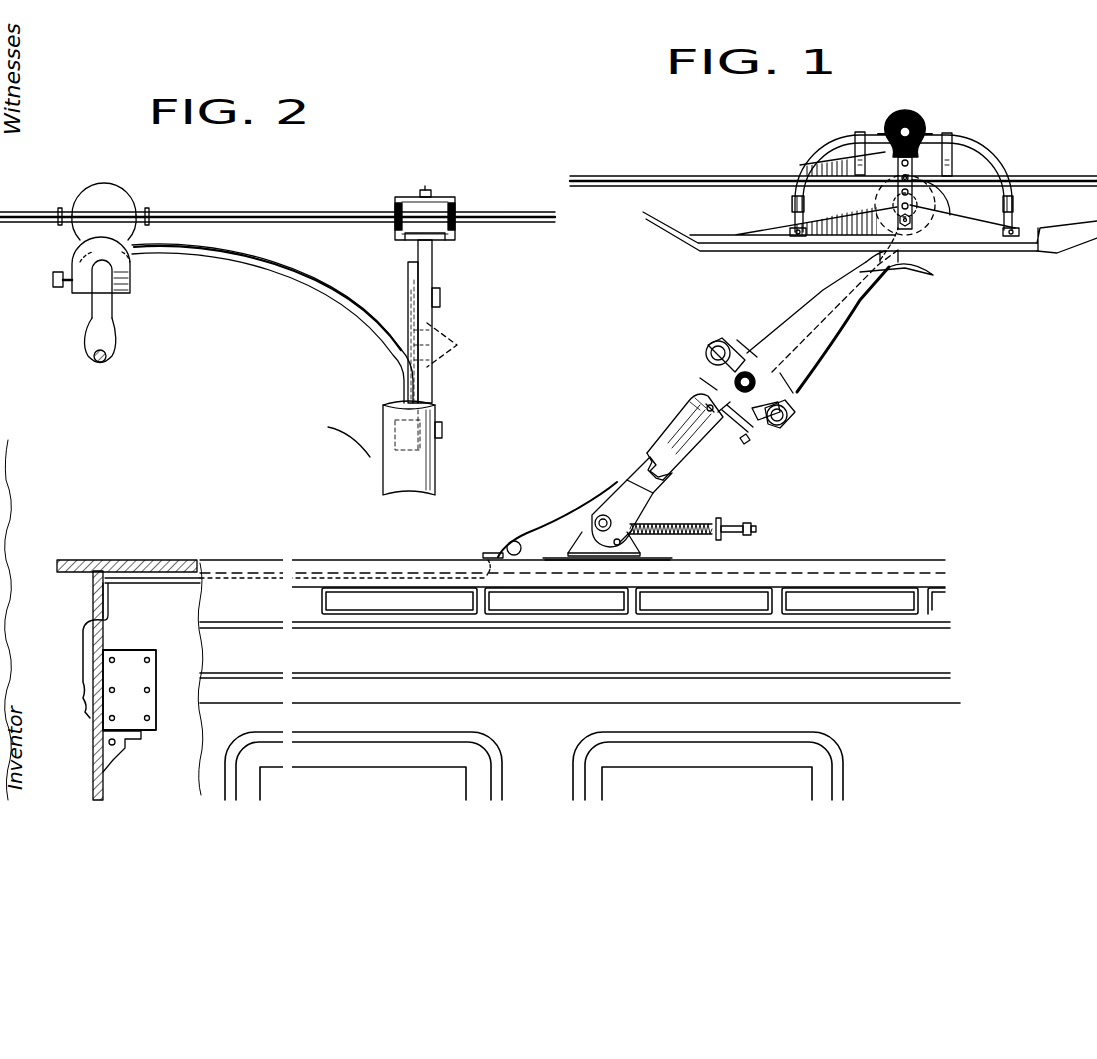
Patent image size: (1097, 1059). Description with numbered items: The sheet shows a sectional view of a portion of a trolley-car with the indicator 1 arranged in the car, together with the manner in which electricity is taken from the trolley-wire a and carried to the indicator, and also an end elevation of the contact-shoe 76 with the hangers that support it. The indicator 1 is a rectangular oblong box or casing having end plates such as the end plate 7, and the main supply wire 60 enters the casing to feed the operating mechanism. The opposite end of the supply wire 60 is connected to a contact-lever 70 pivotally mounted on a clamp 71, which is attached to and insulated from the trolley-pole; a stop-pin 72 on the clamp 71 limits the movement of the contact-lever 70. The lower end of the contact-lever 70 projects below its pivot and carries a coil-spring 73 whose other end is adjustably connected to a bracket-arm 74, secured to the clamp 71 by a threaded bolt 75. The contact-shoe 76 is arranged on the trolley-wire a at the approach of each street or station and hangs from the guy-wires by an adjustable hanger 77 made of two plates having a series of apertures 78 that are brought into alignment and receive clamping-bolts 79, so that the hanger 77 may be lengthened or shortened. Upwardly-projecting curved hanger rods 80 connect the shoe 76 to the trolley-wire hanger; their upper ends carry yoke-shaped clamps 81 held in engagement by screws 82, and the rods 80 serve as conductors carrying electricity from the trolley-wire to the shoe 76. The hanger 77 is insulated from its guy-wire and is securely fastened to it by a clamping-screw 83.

In FIG. 2, the trolley-wire a is at (316, 212).
In FIG. 1, the trolley-wire a is at (694, 177).
In FIG. 1, the indicator 1 is at (143, 681).
In FIG. 1, the end plate 7 is at (127, 661).
In FIG. 1, the main supply wire 60 is at (670, 423).
In FIG. 1, the contact-lever 70 is at (797, 327).
In FIG. 1, the clamp 71 is at (777, 390).
In FIG. 1, the stop-pin 72 is at (780, 403).
In FIG. 1, the coil-spring 73 is at (723, 427).
In FIG. 1, the bracket-arm 74 is at (753, 433).
In FIG. 1, the threaded bolt 75 is at (780, 418).
In FIG. 2, the contact-shoe 76 is at (398, 468).
In FIG. 1, the contact-shoe 76 is at (766, 251).
In FIG. 2, the supporting-bar or hanger 77 is at (433, 275).
In FIG. 1, the supporting-bar or hanger 77 is at (906, 166).
In FIG. 2, the apertures 78 is at (457, 345).
In FIG. 1, the apertures 78 is at (906, 224).
In FIG. 2, the clamping-bolts 79 is at (441, 299).
In FIG. 1, the clamping-bolts 79 is at (897, 168).
In FIG. 2, the curved hanger rods 80 is at (312, 293).
In FIG. 1, the curved hanger rods 80 is at (807, 163).
In FIG. 2, the yoke-shaped clamps 81 is at (128, 283).
In FIG. 1, the yoke-shaped clamps 81 is at (878, 136).
In FIG. 2, the screws 82 is at (53, 282).
In FIG. 2, the clamping-screw 83 is at (435, 195).
In FIG. 1, the clamping-screw 83 is at (917, 121).